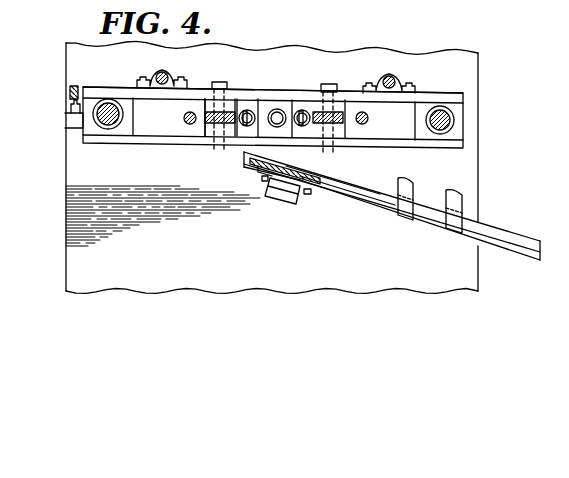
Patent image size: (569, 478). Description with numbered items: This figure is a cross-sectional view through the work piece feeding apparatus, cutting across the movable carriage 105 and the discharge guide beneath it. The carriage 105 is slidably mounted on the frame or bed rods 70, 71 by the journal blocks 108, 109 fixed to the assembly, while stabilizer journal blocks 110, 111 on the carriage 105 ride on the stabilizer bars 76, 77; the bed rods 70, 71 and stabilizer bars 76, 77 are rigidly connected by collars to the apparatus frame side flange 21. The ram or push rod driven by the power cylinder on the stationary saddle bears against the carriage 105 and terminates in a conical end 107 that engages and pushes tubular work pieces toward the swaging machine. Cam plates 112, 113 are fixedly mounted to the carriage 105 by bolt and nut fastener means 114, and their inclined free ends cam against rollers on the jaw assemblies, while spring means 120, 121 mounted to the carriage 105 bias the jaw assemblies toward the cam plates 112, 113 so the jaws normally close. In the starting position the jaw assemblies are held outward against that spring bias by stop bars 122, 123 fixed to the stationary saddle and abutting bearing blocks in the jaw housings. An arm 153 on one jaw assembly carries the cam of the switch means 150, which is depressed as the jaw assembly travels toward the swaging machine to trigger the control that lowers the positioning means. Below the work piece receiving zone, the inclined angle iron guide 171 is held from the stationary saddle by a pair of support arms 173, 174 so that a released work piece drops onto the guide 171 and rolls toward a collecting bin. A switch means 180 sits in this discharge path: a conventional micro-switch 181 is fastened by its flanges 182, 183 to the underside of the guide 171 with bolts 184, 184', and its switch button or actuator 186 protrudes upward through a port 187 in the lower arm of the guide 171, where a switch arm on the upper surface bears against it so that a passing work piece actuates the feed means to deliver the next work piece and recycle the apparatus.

The apparatus frame side flange 21 is at (76, 249).
The bed rod 70 is at (447, 112).
The bed rod 71 is at (108, 100).
The stabilizer bar 76 is at (386, 78).
The stabilizer bar 77 is at (159, 73).
The carriage 105 is at (462, 92).
The conical end 107 is at (277, 109).
The journal block 108 is at (465, 131).
The journal block 109 is at (88, 129).
The stabilizer journal block 110 is at (396, 72).
The stabilizer journal block 111 is at (168, 72).
The cam plate 112 is at (304, 127).
The cam plate 113 is at (214, 124).
The bolt and nut fastener means 114 is at (218, 82).
The spring means 120 is at (292, 108).
The spring means 121 is at (247, 127).
The stop bar 122 is at (368, 116).
The stop bar 123 is at (184, 118).
The switch means 150 is at (66, 113).
The arm 153 is at (70, 92).
The angle iron guide 171 is at (519, 244).
The support arm 173 is at (410, 182).
The support arm 174 is at (462, 199).
The switch means 180 is at (272, 202).
The micro-switch 181 is at (288, 204).
The switch flange 182 is at (314, 189).
The switch flange 183 is at (262, 176).
The bolt 184 is at (335, 217).
The bolt 184' is at (244, 190).
The switch button 186 is at (300, 176).
The port 187 is at (348, 191).